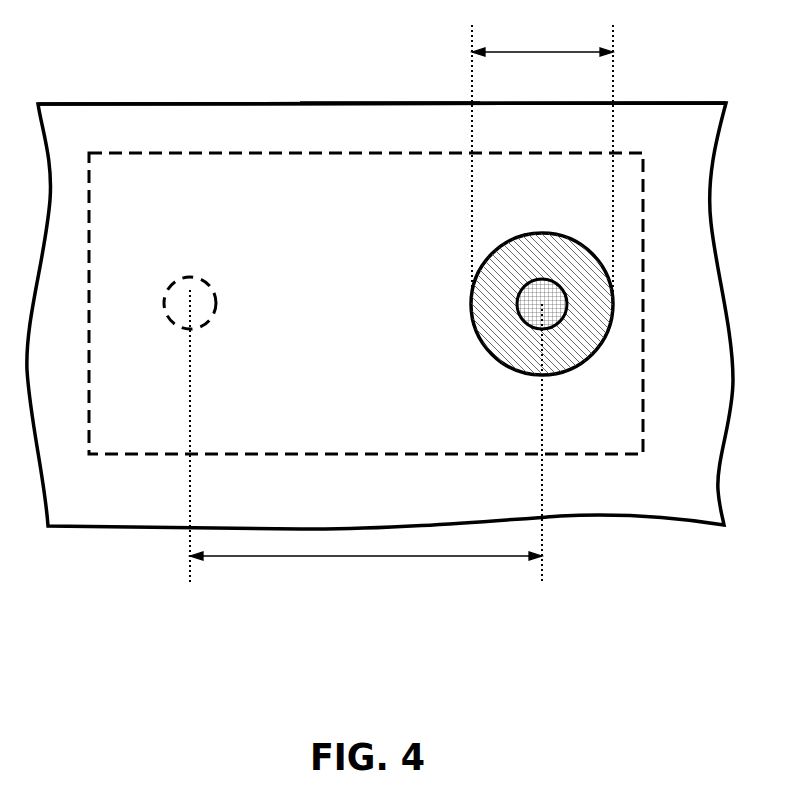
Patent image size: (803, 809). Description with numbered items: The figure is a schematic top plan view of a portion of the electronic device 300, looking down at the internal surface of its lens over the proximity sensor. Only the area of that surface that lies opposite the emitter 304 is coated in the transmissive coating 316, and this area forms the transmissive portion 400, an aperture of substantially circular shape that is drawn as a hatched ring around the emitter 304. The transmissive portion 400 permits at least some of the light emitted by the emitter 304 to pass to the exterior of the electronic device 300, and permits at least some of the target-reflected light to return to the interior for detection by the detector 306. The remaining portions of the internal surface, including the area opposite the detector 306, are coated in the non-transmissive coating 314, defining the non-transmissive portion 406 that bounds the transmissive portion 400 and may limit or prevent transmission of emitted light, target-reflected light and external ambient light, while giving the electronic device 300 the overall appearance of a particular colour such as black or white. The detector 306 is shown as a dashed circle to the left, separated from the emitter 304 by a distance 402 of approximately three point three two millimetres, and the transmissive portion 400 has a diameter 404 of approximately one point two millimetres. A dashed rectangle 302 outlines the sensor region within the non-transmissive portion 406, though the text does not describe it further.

The electronic device 300 is at (140, 555).
The target region 302 is at (366, 458).
The emitter 304 is at (541, 304).
The detector 306 is at (190, 300).
The non-transmissive coating 314 is at (150, 128).
The transmissive coating 316 is at (534, 354).
The transmissive portion 400 is at (552, 234).
The distance 402 is at (366, 437).
The diameter 404 is at (542, 162).
The non-transmissive portion 406 is at (391, 104).